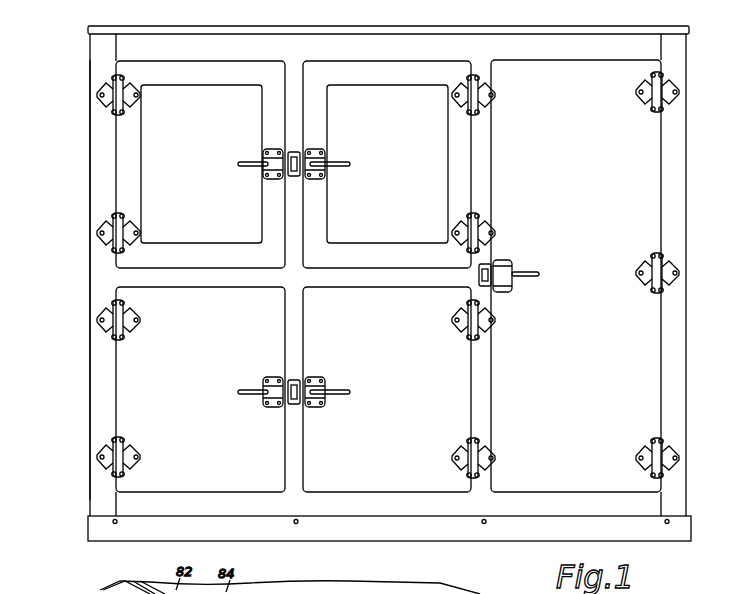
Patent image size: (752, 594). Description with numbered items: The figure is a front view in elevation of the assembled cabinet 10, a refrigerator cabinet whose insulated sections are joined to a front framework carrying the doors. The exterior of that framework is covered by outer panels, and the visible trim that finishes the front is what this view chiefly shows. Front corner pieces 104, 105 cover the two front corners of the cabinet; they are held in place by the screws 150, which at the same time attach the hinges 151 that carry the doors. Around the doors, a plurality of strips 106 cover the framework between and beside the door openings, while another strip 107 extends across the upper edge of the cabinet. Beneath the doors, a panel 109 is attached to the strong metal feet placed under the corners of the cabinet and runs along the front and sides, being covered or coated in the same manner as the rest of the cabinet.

The cabinet 10 is at (681, 80).
The front corner piece 104 is at (98, 281).
The front corner piece 105 is at (677, 293).
The strip 106 is at (377, 45).
The strip 107 is at (263, 32).
The panel 109 is at (427, 528).
The screw 150 is at (113, 438).
The hinge 151 is at (110, 467).